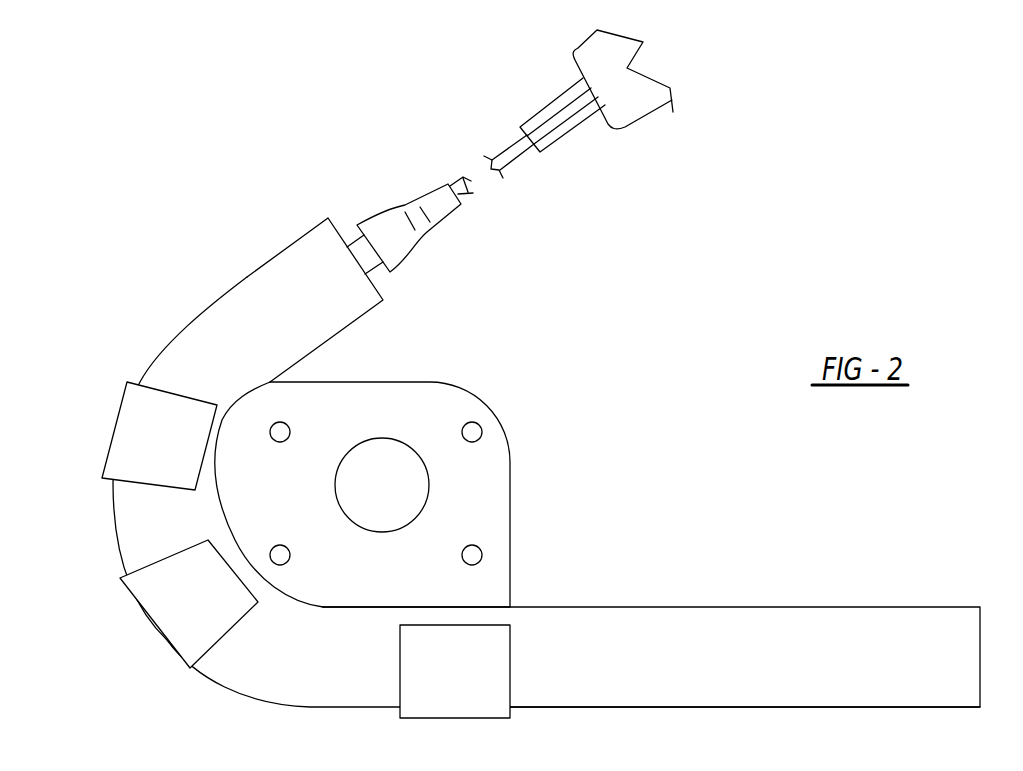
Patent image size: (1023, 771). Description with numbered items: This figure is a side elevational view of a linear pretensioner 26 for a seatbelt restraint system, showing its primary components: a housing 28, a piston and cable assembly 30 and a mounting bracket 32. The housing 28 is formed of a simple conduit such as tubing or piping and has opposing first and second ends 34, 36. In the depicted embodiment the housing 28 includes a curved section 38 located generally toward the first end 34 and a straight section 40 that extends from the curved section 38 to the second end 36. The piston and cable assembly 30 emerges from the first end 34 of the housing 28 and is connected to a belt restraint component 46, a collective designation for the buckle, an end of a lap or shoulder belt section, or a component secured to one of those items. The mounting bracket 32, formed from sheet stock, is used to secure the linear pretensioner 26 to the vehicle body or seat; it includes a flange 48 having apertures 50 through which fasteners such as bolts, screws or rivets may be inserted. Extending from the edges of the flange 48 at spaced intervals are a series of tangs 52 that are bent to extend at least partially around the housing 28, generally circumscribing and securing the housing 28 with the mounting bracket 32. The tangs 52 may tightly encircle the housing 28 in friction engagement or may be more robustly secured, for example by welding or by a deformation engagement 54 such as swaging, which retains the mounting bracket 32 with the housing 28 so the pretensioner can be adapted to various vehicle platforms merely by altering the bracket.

The linear pretensioner 26 is at (511, 448).
The housing 28 is at (651, 621).
The piston and cable assembly 30 is at (527, 152).
The mounting bracket 32 is at (458, 467).
The first end 34 is at (307, 233).
The second end 36 is at (907, 606).
The curved section 38 is at (113, 512).
The straight section 40 is at (700, 690).
The belt restraint component 46 is at (635, 103).
The flange 48 is at (493, 510).
The apertures 50 is at (280, 552).
The tangs 52 is at (120, 403).
The deformation engagement 54 is at (301, 540).